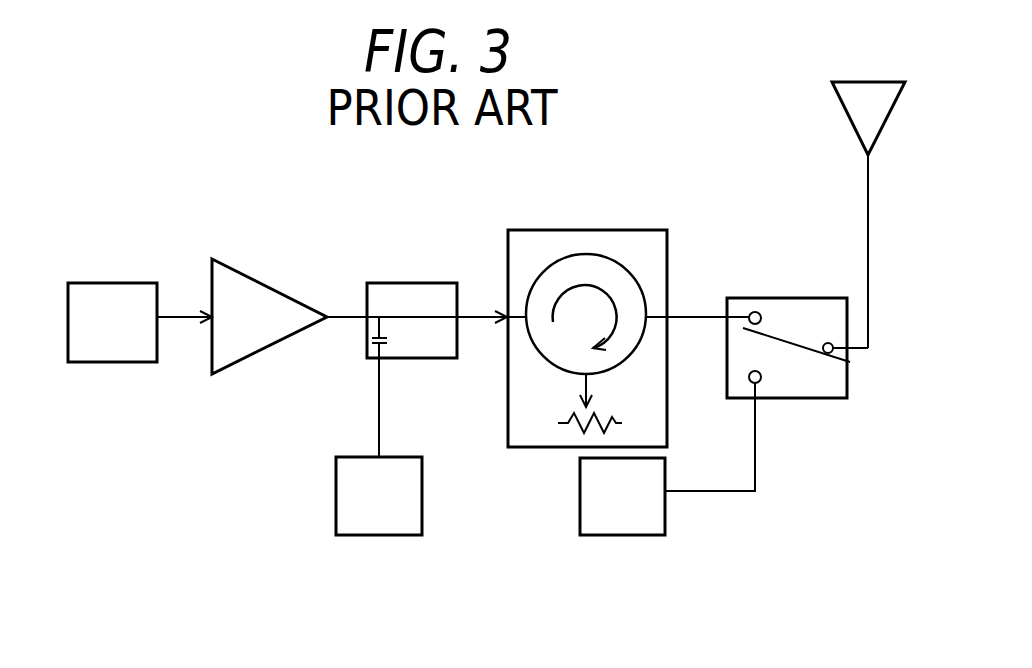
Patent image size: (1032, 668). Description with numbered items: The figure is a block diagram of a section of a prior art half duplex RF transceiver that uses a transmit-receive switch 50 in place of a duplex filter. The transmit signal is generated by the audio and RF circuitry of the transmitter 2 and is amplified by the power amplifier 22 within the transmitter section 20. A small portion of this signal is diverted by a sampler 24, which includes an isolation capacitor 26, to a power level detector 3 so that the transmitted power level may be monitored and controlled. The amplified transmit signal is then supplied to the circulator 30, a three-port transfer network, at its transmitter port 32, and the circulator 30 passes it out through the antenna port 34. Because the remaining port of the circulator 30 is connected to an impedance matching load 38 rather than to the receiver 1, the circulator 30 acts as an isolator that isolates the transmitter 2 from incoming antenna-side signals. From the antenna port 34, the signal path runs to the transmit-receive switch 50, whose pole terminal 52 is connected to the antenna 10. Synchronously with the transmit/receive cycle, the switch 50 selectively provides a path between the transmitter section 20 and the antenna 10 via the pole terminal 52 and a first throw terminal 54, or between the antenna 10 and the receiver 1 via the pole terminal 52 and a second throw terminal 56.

The receiver 1 is at (580, 496).
The transmitter 2 is at (109, 283).
The power level detector 3 is at (360, 457).
The antenna 10 is at (862, 156).
The transmitter section 20 is at (313, 247).
The power amplifier 22 is at (212, 295).
The sampler 24 is at (400, 283).
The isolation capacitor 26 is at (370, 347).
The circulator 30 is at (577, 230).
The transmitter port 32 is at (505, 323).
The antenna port 34 is at (672, 312).
The impedance matching load 38 is at (550, 421).
The transmit-receive switch 50 is at (812, 298).
The pole terminal 52 is at (835, 354).
The first throw terminal 54 is at (757, 310).
The second throw terminal 56 is at (748, 383).